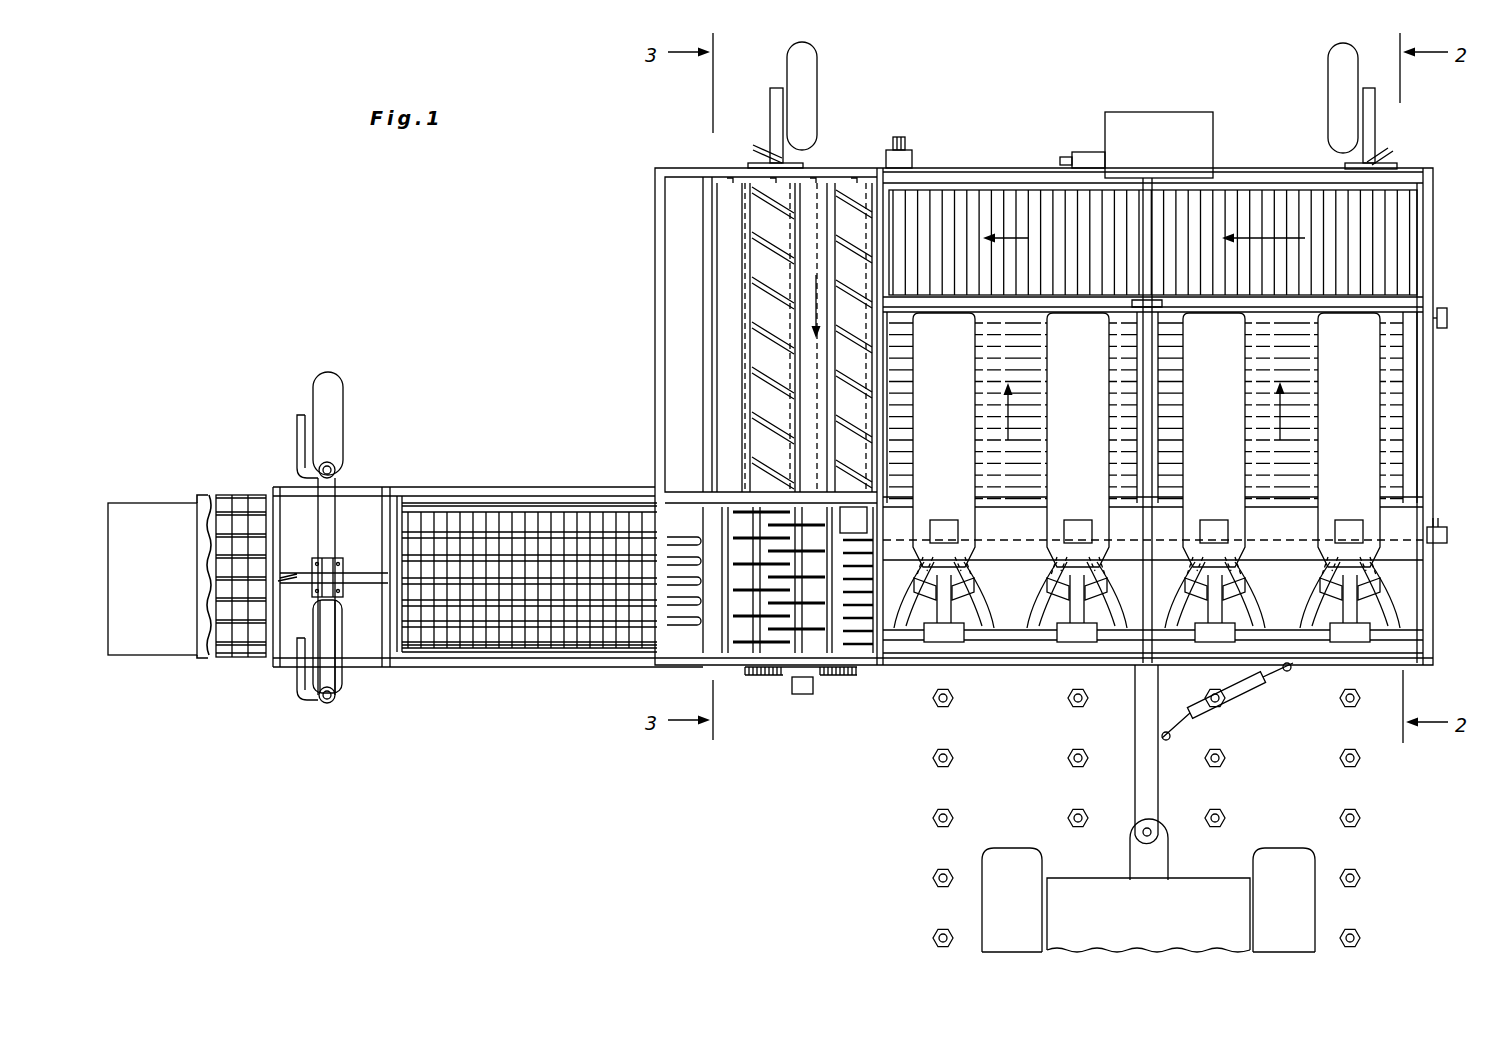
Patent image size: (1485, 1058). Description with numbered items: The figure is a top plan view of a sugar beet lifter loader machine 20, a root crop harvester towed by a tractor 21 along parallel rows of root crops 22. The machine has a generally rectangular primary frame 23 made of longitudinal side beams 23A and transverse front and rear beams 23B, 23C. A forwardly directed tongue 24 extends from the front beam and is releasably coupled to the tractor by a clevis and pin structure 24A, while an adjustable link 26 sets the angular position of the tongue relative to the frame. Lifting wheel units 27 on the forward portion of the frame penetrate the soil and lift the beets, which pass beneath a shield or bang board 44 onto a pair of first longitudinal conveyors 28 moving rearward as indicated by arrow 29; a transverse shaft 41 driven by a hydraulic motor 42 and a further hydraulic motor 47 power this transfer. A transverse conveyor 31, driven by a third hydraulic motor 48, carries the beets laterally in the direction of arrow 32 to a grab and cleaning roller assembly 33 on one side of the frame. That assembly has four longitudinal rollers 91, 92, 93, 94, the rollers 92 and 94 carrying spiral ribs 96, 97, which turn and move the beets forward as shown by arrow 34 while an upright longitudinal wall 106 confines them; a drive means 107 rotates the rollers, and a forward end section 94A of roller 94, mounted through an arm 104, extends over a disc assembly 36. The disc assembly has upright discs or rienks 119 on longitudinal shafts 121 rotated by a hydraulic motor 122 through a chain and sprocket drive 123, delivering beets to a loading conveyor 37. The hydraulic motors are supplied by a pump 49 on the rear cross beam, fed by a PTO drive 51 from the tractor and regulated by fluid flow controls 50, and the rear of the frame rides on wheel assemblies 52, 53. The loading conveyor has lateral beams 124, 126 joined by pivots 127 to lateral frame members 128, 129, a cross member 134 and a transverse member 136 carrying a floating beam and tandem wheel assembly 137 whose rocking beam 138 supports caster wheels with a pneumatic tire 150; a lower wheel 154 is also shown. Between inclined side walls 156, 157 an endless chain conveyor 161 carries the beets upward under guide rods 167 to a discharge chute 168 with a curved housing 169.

The lifter loader machine 20 is at (598, 252).
The tractor 21 is at (1303, 907).
The root crops 22 is at (1068, 758).
The primary frame 23 is at (1424, 443).
The longitudinal side beams 23A is at (1424, 490).
The front beam 23B is at (1413, 663).
The rear beam 23C is at (1243, 172).
The tongue 24 is at (1140, 713).
The clevis and pin structure 24A is at (1143, 828).
The adjustable link 26 is at (1245, 693).
The lifting wheel units 27 is at (1033, 612).
The first longitudinal conveyors 28 is at (1012, 365).
The arrow 29 is at (1008, 418).
The transverse conveyor 31 is at (1358, 232).
The arrow 32 is at (1030, 238).
The grab and cleaning roller assembly 33 is at (813, 225).
The arrow 34 is at (816, 291).
The disc assembly 36 is at (833, 645).
The loading conveyor 37 is at (560, 677).
The transverse shaft 41 is at (1400, 568).
The hydraulic motor 42 is at (1442, 545).
The shield or bang board 44 is at (1360, 406).
The hydraulic motor 47 is at (1447, 312).
The third hydraulic motor 48 is at (906, 147).
The pump 49 is at (1152, 120).
The fluid flow controls 50 is at (1093, 152).
The PTO drive 51 is at (1152, 268).
The wheel assembly 52 is at (1318, 75).
The wheel assembly 53 is at (827, 75).
The roller 91 is at (745, 384).
The roller 92 is at (778, 364).
The roller 93 is at (826, 374).
The roller 94 is at (865, 364).
The forward end section 94A is at (867, 513).
The spiral rib 96 is at (778, 300).
The spiral rib 97 is at (860, 312).
The arm 104 is at (867, 533).
The upright longitudinal wall 106 is at (703, 316).
The drive means 107 is at (985, 150).
The discs or rienks 119 is at (870, 642).
The longitudinal shafts 121 is at (793, 640).
The hydraulic motor 122 is at (797, 695).
The chain and sprocket drive 123 is at (855, 676).
The lateral beam 124 is at (515, 492).
The lateral beam 126 is at (593, 665).
The pivots 127 is at (858, 477).
The lateral frame member 128 is at (685, 495).
The lateral frame member 129 is at (712, 657).
The cross member 134 is at (374, 638).
The transverse member 136 is at (350, 574).
The floating beam and tandem wheel assembly 137 is at (263, 418).
The rocking beam 138 is at (330, 487).
The pneumatic tire 150 is at (330, 392).
The lower wheel 154 is at (345, 690).
The side wall 156 is at (455, 500).
The side wall 157 is at (503, 653).
The endless chain conveyor 161 is at (470, 630).
The guide rods 167 is at (537, 535).
The discharge chute 168 is at (147, 530).
The curved housing 169 is at (147, 632).